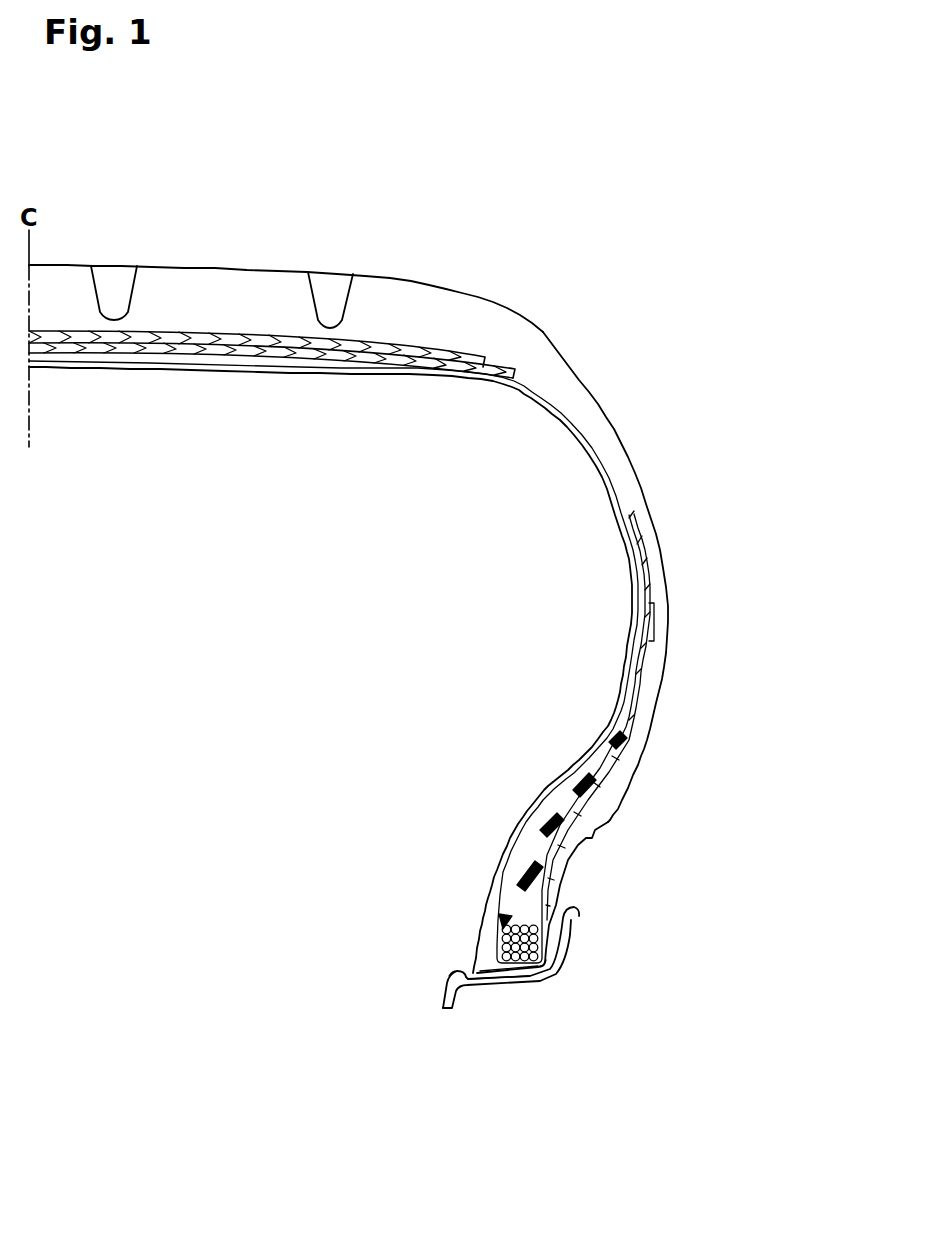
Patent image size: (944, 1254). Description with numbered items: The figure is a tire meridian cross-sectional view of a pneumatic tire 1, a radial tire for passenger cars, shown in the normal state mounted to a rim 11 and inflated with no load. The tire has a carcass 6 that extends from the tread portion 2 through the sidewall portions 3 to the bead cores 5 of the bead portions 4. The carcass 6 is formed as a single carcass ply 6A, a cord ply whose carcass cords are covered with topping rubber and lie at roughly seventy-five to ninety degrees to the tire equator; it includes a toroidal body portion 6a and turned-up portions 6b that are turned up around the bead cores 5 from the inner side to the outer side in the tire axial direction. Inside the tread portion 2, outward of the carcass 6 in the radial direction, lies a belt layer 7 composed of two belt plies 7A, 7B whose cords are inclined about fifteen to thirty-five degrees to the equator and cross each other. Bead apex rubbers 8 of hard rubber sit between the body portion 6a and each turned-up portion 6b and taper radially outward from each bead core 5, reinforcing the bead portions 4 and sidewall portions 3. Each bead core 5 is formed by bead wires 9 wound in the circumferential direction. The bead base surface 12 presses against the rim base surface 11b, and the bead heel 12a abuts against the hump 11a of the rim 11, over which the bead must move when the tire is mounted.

The pneumatic tire 1 is at (432, 218).
The tread portion 2 is at (251, 259).
The sidewall portion 3 is at (660, 489).
The bead portion 4 is at (586, 889).
The bead core 5 is at (470, 926).
The carcass 6 is at (495, 548).
The carcass ply 6A is at (341, 662).
The body portion 6a is at (645, 570).
The turned-up portion 6b is at (650, 638).
The belt layer 7 is at (237, 475).
The belt ply 7A is at (150, 342).
The belt ply 7B is at (215, 337).
The bead apex rubber 8 is at (541, 853).
The bead wire 9 is at (538, 963).
The rim 11 is at (591, 948).
The hump 11a is at (450, 977).
The rim base surface 11b is at (497, 978).
The bead base surface 12 is at (505, 968).
The bead heel 12a is at (555, 965).